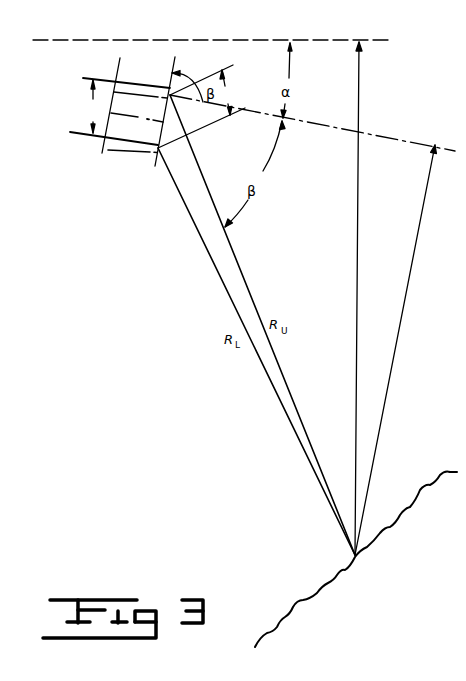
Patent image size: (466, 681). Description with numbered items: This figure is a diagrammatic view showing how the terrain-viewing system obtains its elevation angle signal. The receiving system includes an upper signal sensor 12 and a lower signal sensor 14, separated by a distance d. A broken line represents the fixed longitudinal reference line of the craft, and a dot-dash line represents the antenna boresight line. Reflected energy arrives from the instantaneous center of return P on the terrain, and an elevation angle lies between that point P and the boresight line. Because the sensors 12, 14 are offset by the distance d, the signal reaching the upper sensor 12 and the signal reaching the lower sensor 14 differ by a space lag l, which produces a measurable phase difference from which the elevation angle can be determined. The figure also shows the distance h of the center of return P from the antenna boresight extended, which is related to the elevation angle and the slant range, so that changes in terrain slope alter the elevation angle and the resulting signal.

The upper signal sensor 12 is at (142, 82).
The lower signal sensor 14 is at (128, 155).
The distance between the pair of sensors d is at (89, 106).
The space lag l is at (228, 94).
The distance of the instantaneous center of return from the antenna boresight extend h is at (390, 298).
The instantaneous center of return P is at (356, 559).